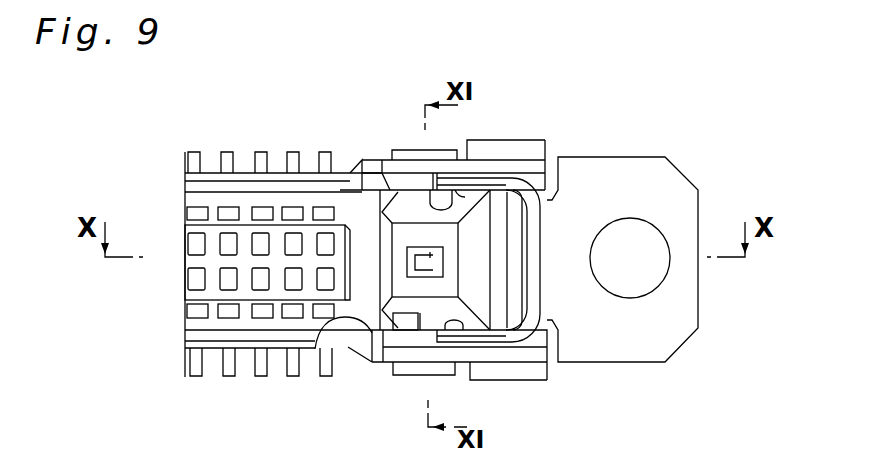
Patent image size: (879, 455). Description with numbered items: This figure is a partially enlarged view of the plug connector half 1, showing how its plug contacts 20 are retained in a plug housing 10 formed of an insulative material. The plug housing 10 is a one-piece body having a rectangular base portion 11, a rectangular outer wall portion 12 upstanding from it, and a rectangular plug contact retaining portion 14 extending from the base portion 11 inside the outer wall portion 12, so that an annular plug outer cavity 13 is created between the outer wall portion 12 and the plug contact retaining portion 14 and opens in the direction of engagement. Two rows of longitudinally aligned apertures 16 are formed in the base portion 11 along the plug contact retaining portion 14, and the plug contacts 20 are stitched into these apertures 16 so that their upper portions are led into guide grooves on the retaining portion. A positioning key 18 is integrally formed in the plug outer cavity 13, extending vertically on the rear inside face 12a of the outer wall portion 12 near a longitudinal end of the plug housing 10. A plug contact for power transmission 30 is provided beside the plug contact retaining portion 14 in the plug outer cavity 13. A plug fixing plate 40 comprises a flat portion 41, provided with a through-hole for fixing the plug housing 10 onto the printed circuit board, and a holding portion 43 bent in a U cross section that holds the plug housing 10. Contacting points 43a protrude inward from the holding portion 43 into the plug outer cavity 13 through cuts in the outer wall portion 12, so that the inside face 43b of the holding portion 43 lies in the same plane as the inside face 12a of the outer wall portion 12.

The plug connector half 1 is at (551, 108).
The plug housing 10 is at (372, 372).
The base portion 11 is at (207, 203).
The outer wall portion 12 is at (346, 358).
The inside face of the outer wall portion 12a is at (323, 340).
The plug outer cavity 13 is at (352, 170).
The plug contact retaining portion 14 is at (349, 200).
The apertures 16 is at (260, 280).
The positioning key 18 is at (416, 304).
The plug contacts 20 is at (261, 384).
The plug contact for power transmission 30 is at (440, 262).
The plug fixing plate 40 is at (662, 374).
The flat portion 41 is at (628, 345).
The holding portion 43 is at (480, 207).
The contacting points 43a is at (428, 195).
The inside face of the holding portion 43b is at (498, 210).